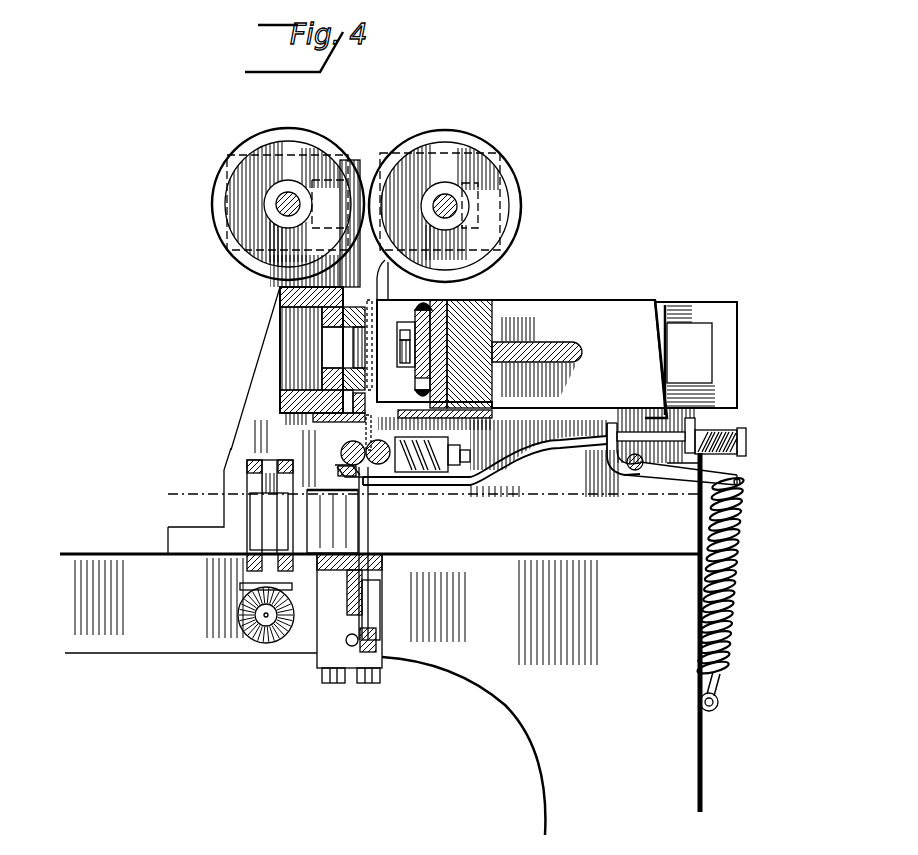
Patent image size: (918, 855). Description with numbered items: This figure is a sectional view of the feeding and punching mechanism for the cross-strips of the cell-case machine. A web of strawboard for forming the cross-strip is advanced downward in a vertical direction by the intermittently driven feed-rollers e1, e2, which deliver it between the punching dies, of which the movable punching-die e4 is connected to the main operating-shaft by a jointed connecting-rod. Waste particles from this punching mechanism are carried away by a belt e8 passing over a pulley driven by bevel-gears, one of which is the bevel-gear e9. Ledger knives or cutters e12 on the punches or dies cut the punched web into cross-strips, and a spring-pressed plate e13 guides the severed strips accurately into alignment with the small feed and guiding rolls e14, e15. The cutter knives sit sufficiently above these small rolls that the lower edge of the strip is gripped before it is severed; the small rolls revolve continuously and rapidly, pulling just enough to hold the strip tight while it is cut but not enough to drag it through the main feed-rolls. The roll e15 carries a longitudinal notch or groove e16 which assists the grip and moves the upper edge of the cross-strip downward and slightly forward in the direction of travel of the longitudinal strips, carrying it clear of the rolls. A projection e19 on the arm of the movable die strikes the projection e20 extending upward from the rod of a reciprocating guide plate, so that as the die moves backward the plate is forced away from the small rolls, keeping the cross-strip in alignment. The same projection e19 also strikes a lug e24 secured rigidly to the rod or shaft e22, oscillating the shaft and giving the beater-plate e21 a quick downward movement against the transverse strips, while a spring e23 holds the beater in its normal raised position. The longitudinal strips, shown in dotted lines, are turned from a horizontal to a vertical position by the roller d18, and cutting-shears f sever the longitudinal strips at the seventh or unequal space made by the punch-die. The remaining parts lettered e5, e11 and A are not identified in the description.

The feed-roller e1 is at (325, 148).
The feed-roller e2 is at (465, 141).
The movable punching-die e4 is at (521, 359).
The adjusting screw e5 is at (400, 343).
The belt e8 is at (522, 464).
The bevel-gear e9 is at (356, 334).
The guide block e11 is at (333, 482).
The ledger knives or cutters e12 is at (364, 432).
The spring-pressed plate e13 is at (372, 418).
The small feed and guiding roll e14 is at (340, 453).
The guide or feed roll e15 is at (395, 460).
The longitudinal notch or groove e16 is at (376, 460).
The projection e19 is at (656, 410).
The projection e20 is at (691, 432).
The beater-plate e21 is at (681, 442).
The rod or shaft e22 is at (637, 471).
The spring e23 is at (708, 619).
The lug e24 is at (607, 433).
The roller d18 is at (258, 512).
The cutting-shears f is at (362, 526).
The frame A is at (518, 690).